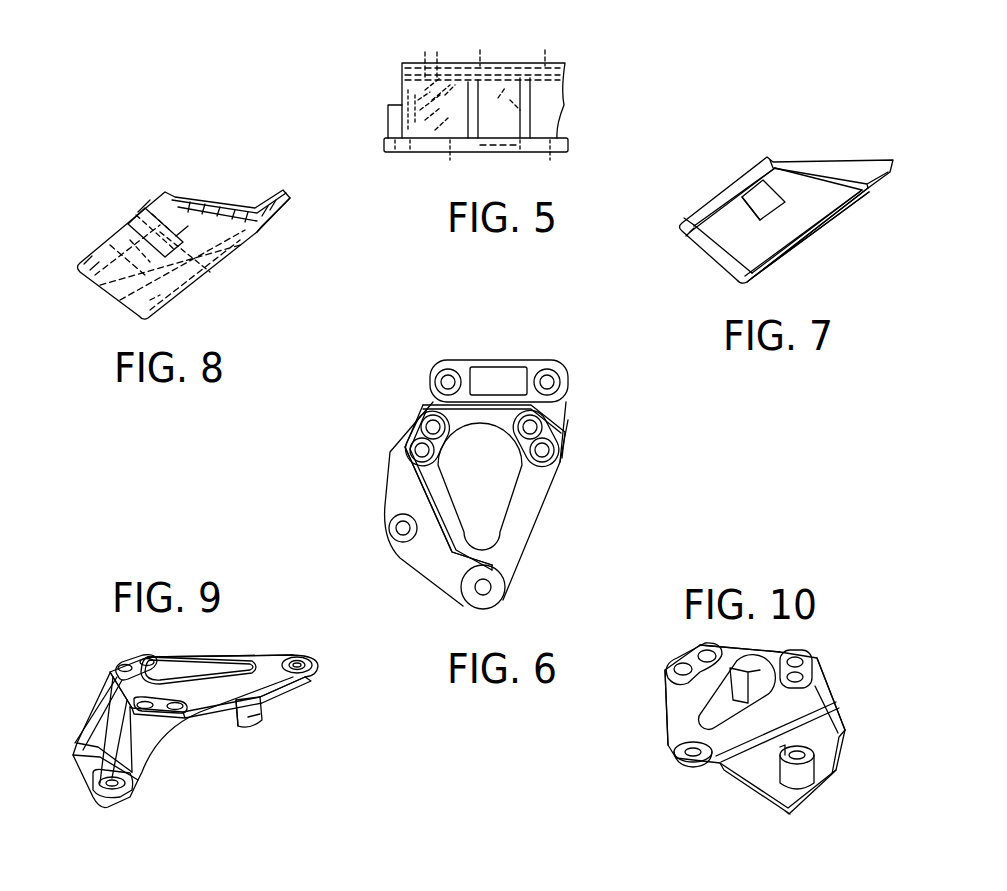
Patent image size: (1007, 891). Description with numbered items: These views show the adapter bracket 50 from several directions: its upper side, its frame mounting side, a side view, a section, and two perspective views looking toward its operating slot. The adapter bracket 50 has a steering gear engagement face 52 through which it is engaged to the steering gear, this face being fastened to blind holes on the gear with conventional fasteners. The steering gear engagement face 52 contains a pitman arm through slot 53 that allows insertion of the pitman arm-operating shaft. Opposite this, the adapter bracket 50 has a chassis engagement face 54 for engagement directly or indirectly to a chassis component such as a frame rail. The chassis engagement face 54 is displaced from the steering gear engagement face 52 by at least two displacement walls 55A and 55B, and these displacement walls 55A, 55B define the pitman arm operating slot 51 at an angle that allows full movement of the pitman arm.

In FIG. 5, the adapter bracket 50 is at (567, 53).
In FIG. 8, the adapter bracket 50 is at (134, 176).
In FIG. 7, the adapter bracket 50 is at (851, 266).
In FIG. 6, the adapter bracket 50 is at (556, 596).
In FIG. 9, the adapter bracket 50 is at (172, 640).
In FIG. 10, the adapter bracket 50 is at (841, 810).
In FIG. 7, the pitman arm operating slot 51 is at (773, 238).
In FIG. 9, the pitman arm operating slot 51 is at (172, 746).
In FIG. 5, the steering gear engagement face 52 is at (416, 58).
In FIG. 8, the steering gear engagement face 52 is at (122, 217).
In FIG. 7, the steering gear engagement face 52 is at (714, 180).
In FIG. 9, the steering gear engagement face 52 is at (264, 666).
In FIG. 10, the steering gear engagement face 52 is at (680, 700).
In FIG. 6, the pitman arm through slot 53 is at (493, 498).
In FIG. 9, the pitman arm through slot 53 is at (193, 683).
In FIG. 10, the pitman arm through slot 53 is at (737, 692).
In FIG. 8, the chassis engagement face 54 is at (256, 240).
In FIG. 7, the chassis engagement face 54 is at (849, 216).
In FIG. 6, the chassis engagement face 54 is at (430, 398).
In FIG. 10, the chassis engagement face 54 is at (846, 763).
In FIG. 6, the displacement wall 55A is at (486, 396).
In FIG. 9, the displacement wall 55A is at (102, 707).
In FIG. 10, the displacement wall 55A is at (774, 680).
In FIG. 6, the displacement wall 55B is at (408, 495).
In FIG. 9, the displacement wall 55B is at (230, 728).
In FIG. 10, the displacement wall 55B is at (810, 727).